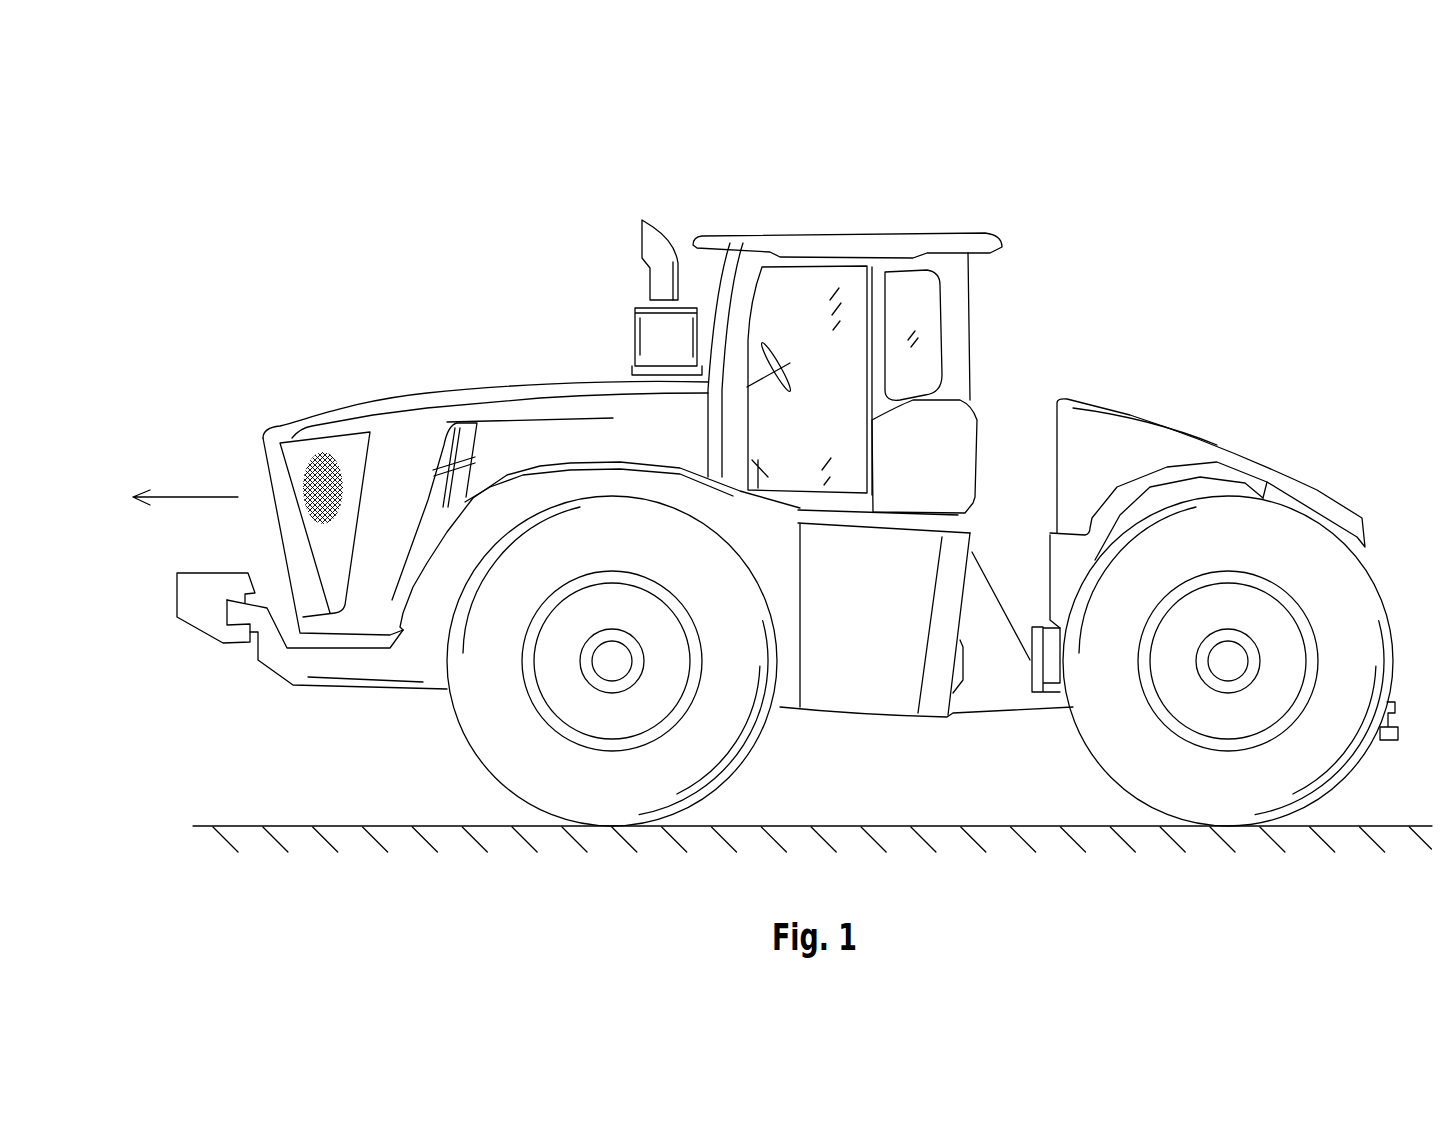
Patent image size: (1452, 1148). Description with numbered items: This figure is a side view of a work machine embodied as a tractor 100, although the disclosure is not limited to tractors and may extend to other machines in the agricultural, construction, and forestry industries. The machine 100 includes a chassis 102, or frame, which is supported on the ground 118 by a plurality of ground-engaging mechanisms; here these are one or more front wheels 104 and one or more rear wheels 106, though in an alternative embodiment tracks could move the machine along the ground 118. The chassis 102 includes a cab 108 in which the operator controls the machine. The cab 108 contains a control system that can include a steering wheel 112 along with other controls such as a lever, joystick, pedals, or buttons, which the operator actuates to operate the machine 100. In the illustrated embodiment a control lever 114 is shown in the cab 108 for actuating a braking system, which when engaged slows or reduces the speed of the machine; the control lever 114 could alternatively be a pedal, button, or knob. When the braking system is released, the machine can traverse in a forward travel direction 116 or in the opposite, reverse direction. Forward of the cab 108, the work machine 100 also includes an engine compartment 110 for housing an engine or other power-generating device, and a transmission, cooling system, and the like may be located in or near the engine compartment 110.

The tractor 100 is at (1105, 158).
The chassis 102 is at (866, 655).
The front wheels 104 is at (608, 824).
The rear wheels 106 is at (1234, 822).
The cab 108 is at (882, 237).
The engine compartment 110 is at (558, 427).
The steering wheel 112 is at (781, 350).
The control lever 114 is at (757, 465).
The forward travel direction 116 is at (193, 497).
The ground 118 is at (237, 810).